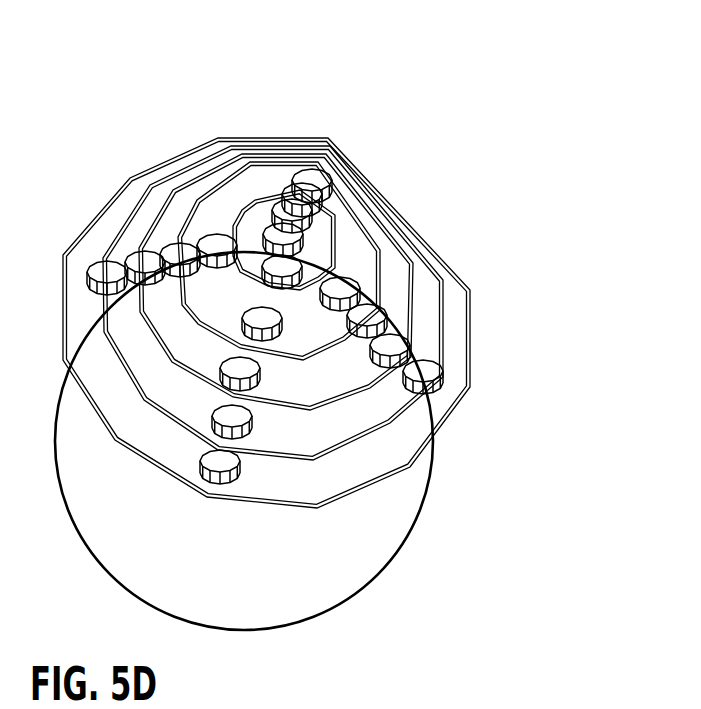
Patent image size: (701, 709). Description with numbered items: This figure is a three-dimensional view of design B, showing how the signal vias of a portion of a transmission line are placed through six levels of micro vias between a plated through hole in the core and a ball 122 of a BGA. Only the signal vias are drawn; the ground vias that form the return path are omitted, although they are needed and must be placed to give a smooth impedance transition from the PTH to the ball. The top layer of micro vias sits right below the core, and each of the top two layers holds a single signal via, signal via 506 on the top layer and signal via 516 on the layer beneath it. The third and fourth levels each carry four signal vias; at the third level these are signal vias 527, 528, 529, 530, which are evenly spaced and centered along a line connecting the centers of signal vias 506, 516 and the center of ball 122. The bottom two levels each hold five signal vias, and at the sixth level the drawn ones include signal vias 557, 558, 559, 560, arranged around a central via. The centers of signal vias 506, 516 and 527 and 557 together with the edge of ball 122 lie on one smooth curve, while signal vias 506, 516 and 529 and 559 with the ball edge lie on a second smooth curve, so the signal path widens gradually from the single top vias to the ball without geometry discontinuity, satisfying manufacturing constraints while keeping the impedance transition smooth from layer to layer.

The ball 122 is at (378, 578).
The signal via 506 is at (385, 192).
The signal via 516 is at (300, 243).
The signal via 527 is at (352, 284).
The signal via 528 is at (283, 280).
The signal via 529 is at (211, 240).
The signal via 530 is at (291, 172).
The signal via 557 is at (445, 375).
The signal via 558 is at (225, 486).
The signal via 559 is at (90, 268).
The signal via 560 is at (330, 148).